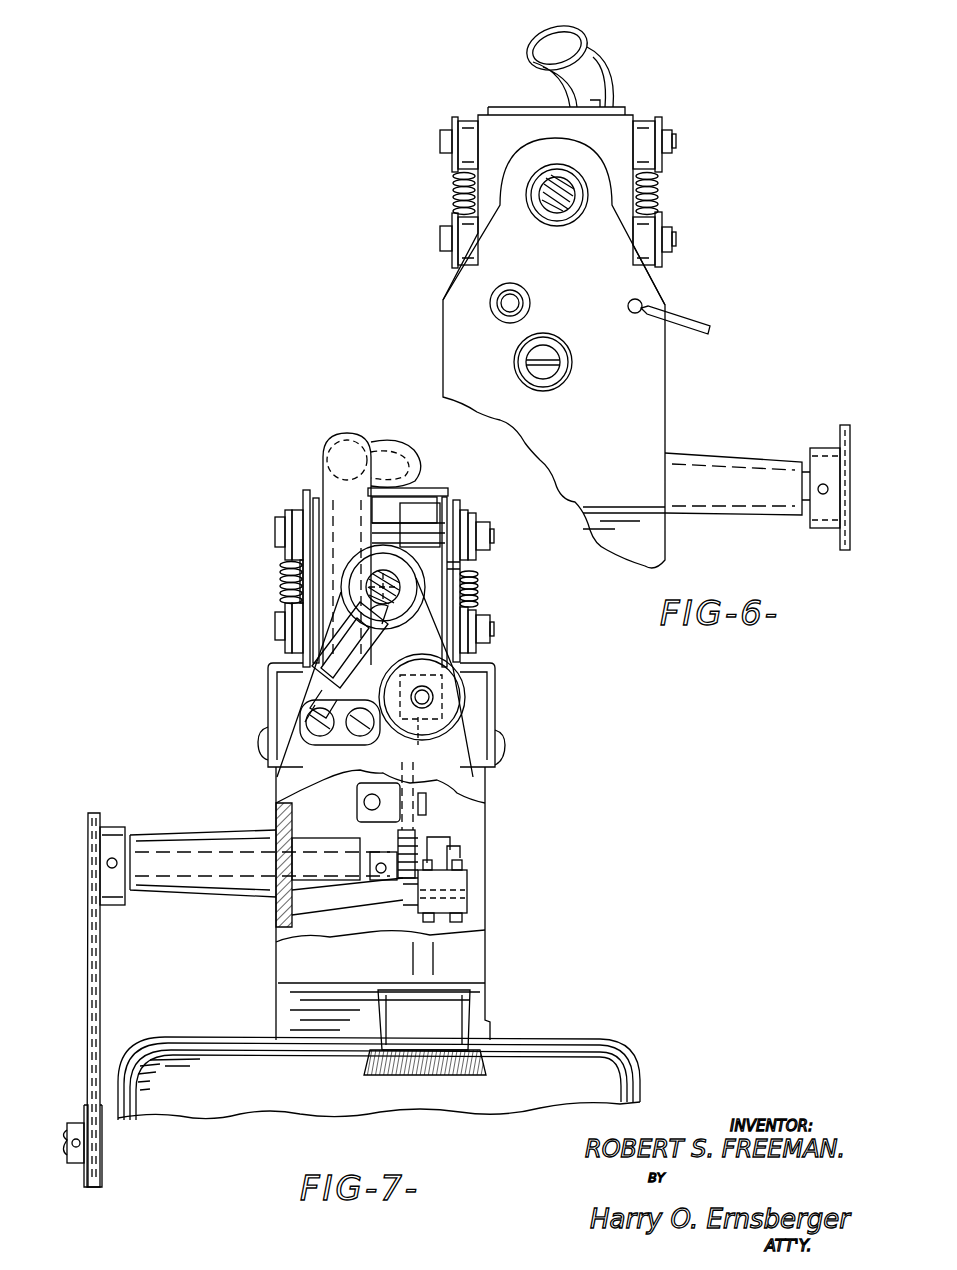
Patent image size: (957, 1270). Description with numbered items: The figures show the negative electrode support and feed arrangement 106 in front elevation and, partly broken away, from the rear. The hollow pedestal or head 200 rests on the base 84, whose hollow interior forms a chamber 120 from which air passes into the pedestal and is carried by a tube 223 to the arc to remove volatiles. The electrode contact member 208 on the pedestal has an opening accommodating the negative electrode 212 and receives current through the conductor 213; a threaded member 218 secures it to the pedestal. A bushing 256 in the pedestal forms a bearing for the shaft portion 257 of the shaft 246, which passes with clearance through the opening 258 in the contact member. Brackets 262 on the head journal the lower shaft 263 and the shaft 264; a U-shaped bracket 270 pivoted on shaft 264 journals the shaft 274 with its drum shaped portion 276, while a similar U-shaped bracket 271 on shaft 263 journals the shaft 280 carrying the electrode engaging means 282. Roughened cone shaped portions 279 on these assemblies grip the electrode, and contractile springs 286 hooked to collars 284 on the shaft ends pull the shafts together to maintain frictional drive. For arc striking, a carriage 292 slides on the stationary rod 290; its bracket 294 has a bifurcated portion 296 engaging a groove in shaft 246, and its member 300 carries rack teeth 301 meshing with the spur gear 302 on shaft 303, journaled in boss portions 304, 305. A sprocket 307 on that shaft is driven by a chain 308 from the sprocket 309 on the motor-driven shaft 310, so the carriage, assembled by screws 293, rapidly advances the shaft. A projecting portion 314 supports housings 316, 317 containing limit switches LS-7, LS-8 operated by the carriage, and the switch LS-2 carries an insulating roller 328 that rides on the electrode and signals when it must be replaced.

In FIG. 7, the base 84 is at (529, 1041).
In FIG. 6, the negative electrode supporting and feeding arrangement 106 is at (430, 208).
In FIG. 7, the negative electrode supporting and feeding arrangement 106 is at (523, 946).
In FIG. 7, the chamber 120 is at (332, 1108).
In FIG. 6, the pedestal 200 is at (660, 547).
In FIG. 7, the pedestal 200 is at (274, 948).
In FIG. 6, the electrode contact member 208 is at (658, 391).
In FIG. 6, the negative electrode 212 is at (570, 165).
In FIG. 7, the negative electrode 212 is at (395, 607).
In FIG. 6, the current supply conductor 213 is at (655, 303).
In FIG. 6, the threaded member 218 is at (514, 361).
In FIG. 6, the tube 223 is at (590, 70).
In FIG. 7, the tube 223 is at (376, 440).
In FIG. 7, the shaft 246 is at (434, 690).
In FIG. 6, the bushing 256 is at (526, 296).
In FIG. 6, the shaft portion 257 is at (511, 316).
In FIG. 6, the opening 258 is at (500, 285).
In FIG. 7, the brackets 262 is at (306, 500).
In FIG. 7, the lower shaft 263 is at (292, 655).
In FIG. 7, the shaft 264 is at (295, 512).
In FIG. 7, the U-shaped bracket 270 is at (440, 491).
In FIG. 7, the U-shaped bracket 271 is at (290, 578).
In FIG. 6, the shaft 274 is at (677, 140).
In FIG. 7, the shaft 274 is at (495, 539).
In FIG. 7, the drum shaped portion 276 is at (412, 498).
In FIG. 7, the cone shaped portions 279 is at (420, 505).
In FIG. 6, the shaft 280 is at (677, 242).
In FIG. 7, the shaft 280 is at (495, 627).
In FIG. 7, the electrode engaging means 282 is at (463, 589).
In FIG. 6, the collars 284 is at (462, 118).
In FIG. 7, the collars 284 is at (278, 526).
In FIG. 6, the contractile springs 286 is at (454, 184).
In FIG. 7, the contractile springs 286 is at (480, 590).
In FIG. 7, the rod 290 is at (357, 803).
In FIG. 7, the carriage 292 is at (479, 795).
In FIG. 7, the screws 293 is at (428, 805).
In FIG. 7, the bracket 294 is at (395, 758).
In FIG. 7, the bifurcated portion 296 is at (428, 730).
In FIG. 7, the carriage member 300 is at (410, 788).
In FIG. 7, the rack teeth 301 is at (406, 848).
In FIG. 7, the spur gear 302 is at (400, 886).
In FIG. 6, the shaft 303 is at (806, 500).
In FIG. 7, the shaft 303 is at (352, 878).
In FIG. 7, the boss portion 304 is at (338, 848).
In FIG. 7, the boss portion 305 is at (238, 833).
In FIG. 6, the sprocket 307 is at (842, 438).
In FIG. 7, the sprocket 307 is at (108, 828).
In FIG. 7, the chain 308 is at (100, 963).
In FIG. 7, the sprocket 309 is at (102, 1164).
In FIG. 7, the shaft 310 is at (63, 1162).
In FIG. 7, the projecting portion 314 is at (392, 905).
In FIG. 7, the housing 316 is at (468, 876).
In FIG. 7, the housing 317 is at (470, 890).
In FIG. 7, the roller 328 is at (375, 612).
In FIG. 7, the switch LS-2 is at (320, 678).
In FIG. 7, the limit switch LS-7 is at (470, 862).
In FIG. 7, the limit switch LS-8 is at (462, 850).